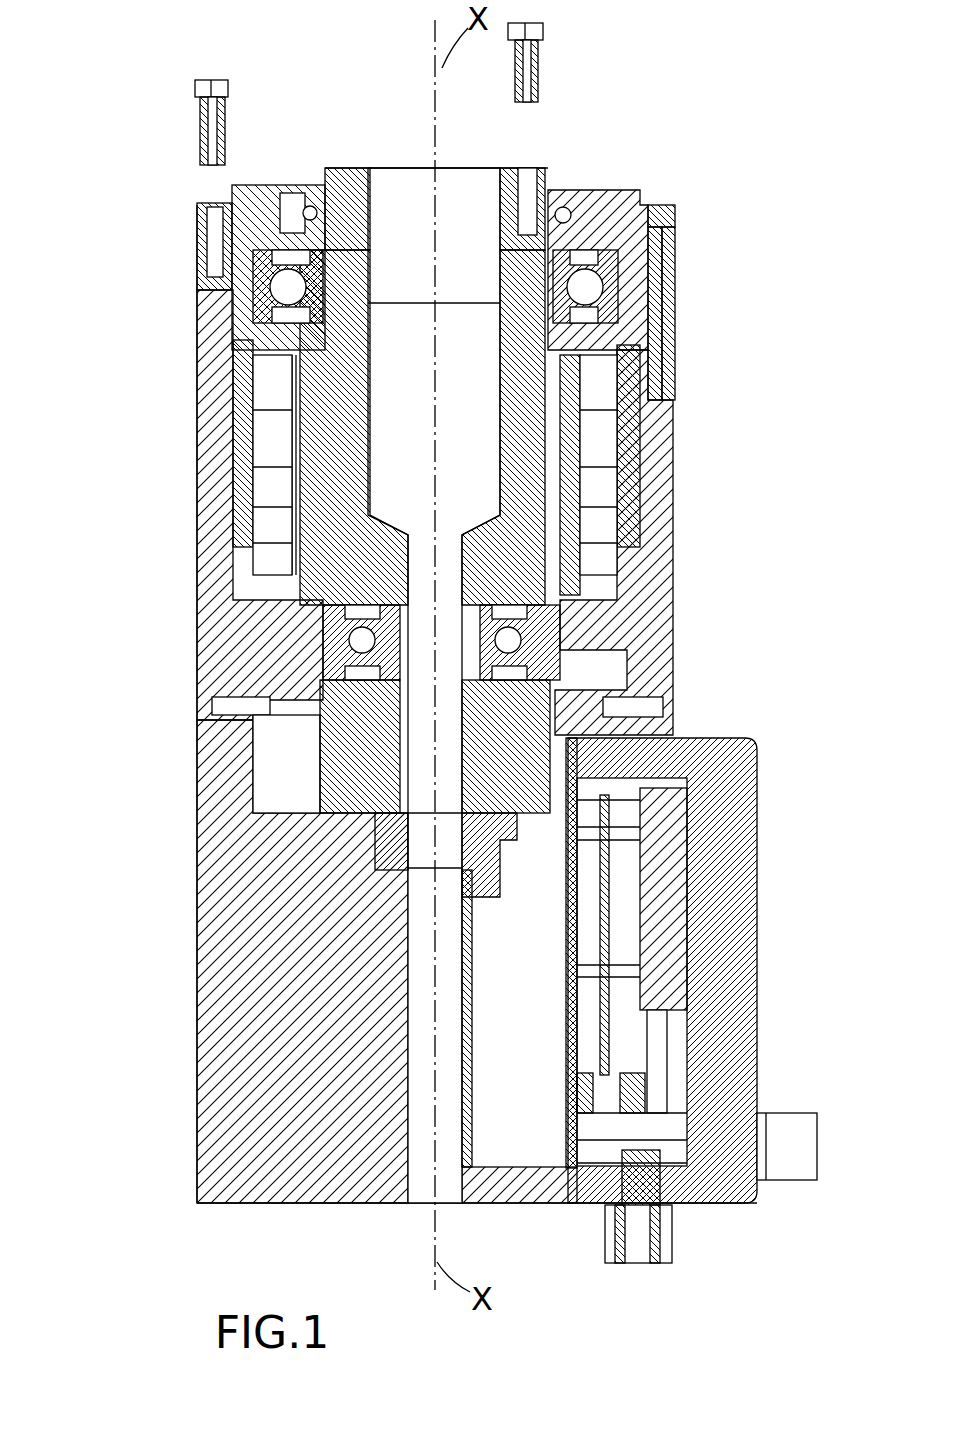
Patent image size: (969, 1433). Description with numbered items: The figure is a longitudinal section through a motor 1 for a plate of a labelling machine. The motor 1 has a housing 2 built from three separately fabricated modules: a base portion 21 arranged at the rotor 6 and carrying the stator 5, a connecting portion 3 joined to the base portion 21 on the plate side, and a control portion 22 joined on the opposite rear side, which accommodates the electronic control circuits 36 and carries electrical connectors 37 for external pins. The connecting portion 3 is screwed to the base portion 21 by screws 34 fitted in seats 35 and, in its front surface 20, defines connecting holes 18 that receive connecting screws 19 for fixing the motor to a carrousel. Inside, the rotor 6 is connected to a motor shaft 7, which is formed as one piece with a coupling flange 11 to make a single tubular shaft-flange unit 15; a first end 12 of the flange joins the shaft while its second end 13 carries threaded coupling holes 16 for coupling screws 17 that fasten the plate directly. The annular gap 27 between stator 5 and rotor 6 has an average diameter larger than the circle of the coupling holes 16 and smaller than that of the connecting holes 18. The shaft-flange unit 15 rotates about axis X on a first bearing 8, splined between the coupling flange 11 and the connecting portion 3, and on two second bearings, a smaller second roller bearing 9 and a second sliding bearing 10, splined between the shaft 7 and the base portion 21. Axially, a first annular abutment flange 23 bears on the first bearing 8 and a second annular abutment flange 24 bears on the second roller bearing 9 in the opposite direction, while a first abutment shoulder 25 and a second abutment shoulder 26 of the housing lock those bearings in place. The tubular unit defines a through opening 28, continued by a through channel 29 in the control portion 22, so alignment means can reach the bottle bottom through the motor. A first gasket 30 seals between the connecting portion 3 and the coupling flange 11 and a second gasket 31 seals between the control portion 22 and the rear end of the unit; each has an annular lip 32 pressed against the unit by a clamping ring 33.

The motor 1 is at (178, 716).
The housing 2 is at (662, 612).
The connecting portion 3 is at (642, 205).
The stator 5 is at (600, 470).
The rotor 6 is at (615, 447).
The motor shaft 7 is at (548, 468).
The first bearing 8 is at (272, 294).
The second roller bearing 9 is at (330, 642).
The second sliding bearing 10 is at (340, 768).
The coupling flange 11 is at (474, 168).
The first end 12 is at (245, 392).
The second end 13 is at (612, 190).
The shaft-flange unit 15 is at (285, 458).
The coupling holes 16 is at (546, 168).
The coupling screws 17 is at (528, 76).
The connecting holes 18 is at (203, 203).
The connecting screws 19 is at (224, 132).
The front surface 20 is at (262, 190).
The base portion 21 is at (232, 598).
The control portion 22 is at (197, 976).
The first annular abutment flange 23 is at (665, 333).
The second annular abutment flange 24 is at (522, 600).
The first abutment shoulder 25 is at (675, 242).
The second abutment shoulder 26 is at (612, 664).
The annular gap 27 is at (340, 452).
The through opening 28 is at (453, 424).
The through channel 29 is at (418, 1084).
The first gasket 30 is at (290, 218).
The second gasket 31 is at (395, 860).
The annular lip 32 is at (205, 240).
The clamping ring 33 is at (314, 164).
The screws 34 is at (675, 292).
The seats 35 is at (675, 264).
The electronic control circuits 36 is at (607, 918).
The electrical connectors 37 is at (795, 1125).